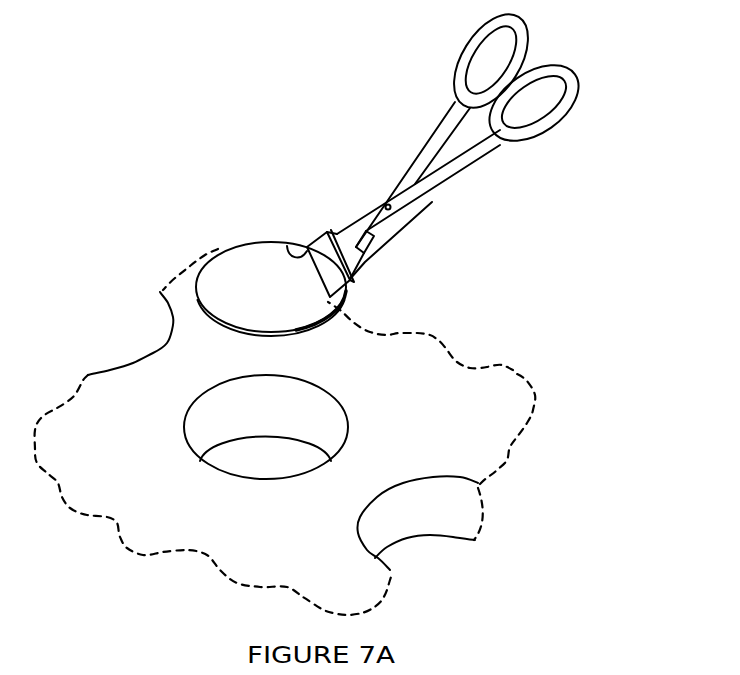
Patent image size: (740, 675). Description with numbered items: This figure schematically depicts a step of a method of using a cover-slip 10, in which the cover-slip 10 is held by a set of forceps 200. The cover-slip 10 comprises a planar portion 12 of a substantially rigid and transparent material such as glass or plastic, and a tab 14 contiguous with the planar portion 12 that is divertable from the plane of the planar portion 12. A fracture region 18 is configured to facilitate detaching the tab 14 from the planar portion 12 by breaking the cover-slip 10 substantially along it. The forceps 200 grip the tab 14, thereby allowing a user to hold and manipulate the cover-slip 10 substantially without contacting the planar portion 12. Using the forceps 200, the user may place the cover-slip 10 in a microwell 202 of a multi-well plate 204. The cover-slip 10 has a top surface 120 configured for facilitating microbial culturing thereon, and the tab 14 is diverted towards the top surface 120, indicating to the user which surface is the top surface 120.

The cover-slip 10 is at (253, 258).
The planar portion 12 is at (290, 313).
The tab 14 is at (308, 245).
The fracture region 18 is at (287, 246).
The top surface 120 is at (228, 277).
The forceps 200 is at (448, 175).
The microwell 202 is at (226, 460).
The multi-well plate 204 is at (510, 388).